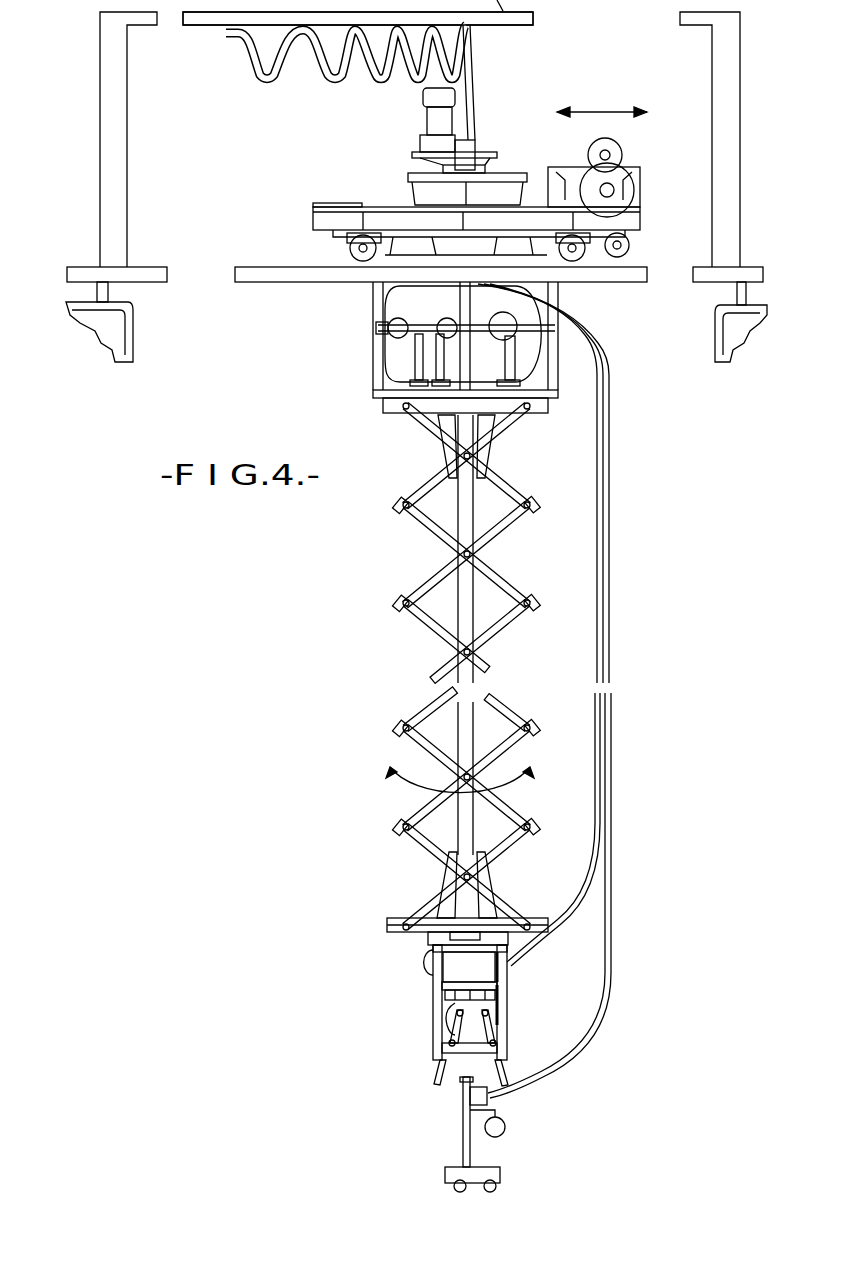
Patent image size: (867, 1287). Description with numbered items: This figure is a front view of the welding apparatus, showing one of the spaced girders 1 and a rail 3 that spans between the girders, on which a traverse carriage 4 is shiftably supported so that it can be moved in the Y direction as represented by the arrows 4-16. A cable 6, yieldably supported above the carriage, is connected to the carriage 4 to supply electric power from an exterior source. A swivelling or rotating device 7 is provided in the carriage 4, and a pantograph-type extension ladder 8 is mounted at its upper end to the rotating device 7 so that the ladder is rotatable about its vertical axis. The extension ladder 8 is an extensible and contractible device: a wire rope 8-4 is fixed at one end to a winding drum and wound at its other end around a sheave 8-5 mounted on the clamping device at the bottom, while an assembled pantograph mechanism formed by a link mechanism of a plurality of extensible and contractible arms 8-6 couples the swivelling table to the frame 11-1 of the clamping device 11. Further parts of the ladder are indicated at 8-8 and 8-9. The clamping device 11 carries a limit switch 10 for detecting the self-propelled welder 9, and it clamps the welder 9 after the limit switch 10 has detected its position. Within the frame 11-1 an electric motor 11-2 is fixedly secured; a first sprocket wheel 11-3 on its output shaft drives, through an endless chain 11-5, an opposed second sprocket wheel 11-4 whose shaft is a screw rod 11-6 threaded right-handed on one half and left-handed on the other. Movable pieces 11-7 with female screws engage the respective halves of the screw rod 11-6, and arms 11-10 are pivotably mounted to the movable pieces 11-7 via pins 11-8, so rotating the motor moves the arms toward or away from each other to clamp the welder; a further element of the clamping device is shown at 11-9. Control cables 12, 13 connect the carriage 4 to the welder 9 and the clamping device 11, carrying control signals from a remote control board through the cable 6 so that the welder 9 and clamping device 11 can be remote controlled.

The girder 1 is at (150, 276).
The rail 3 is at (280, 272).
The carriage 4 is at (341, 215).
The arrows 4-16 is at (588, 110).
The cable 6 is at (335, 85).
The swivelling or rotating device 7 is at (420, 240).
The pantograph-type extension ladder 8 is at (477, 667).
The wire rope 8-4 is at (478, 680).
The sheave 8-5 is at (505, 912).
The extensible and contractible arm 8-6 is at (505, 578).
The central pivot 8-8 is at (478, 453).
The lower guide fork 8-9 is at (482, 882).
The self-propelled welder 9 is at (518, 1134).
The limit switch 10 is at (466, 1066).
The clamping device 11 is at (463, 1022).
The frame 11-1 is at (433, 962).
The electric motor 11-2 is at (460, 965).
The first sprocket wheel 11-3 is at (500, 965).
The second sprocket wheel 11-4 is at (507, 1003).
The endless chain 11-5 is at (508, 996).
The screw rod 11-6 is at (452, 1010).
The movable piece 11-7 is at (445, 995).
The pin 11-8 is at (452, 1028).
The hose coupling 11-9 is at (500, 1090).
The arm 11-10 is at (442, 1080).
The control cable 12 is at (470, 150).
The control cable 13 is at (592, 756).